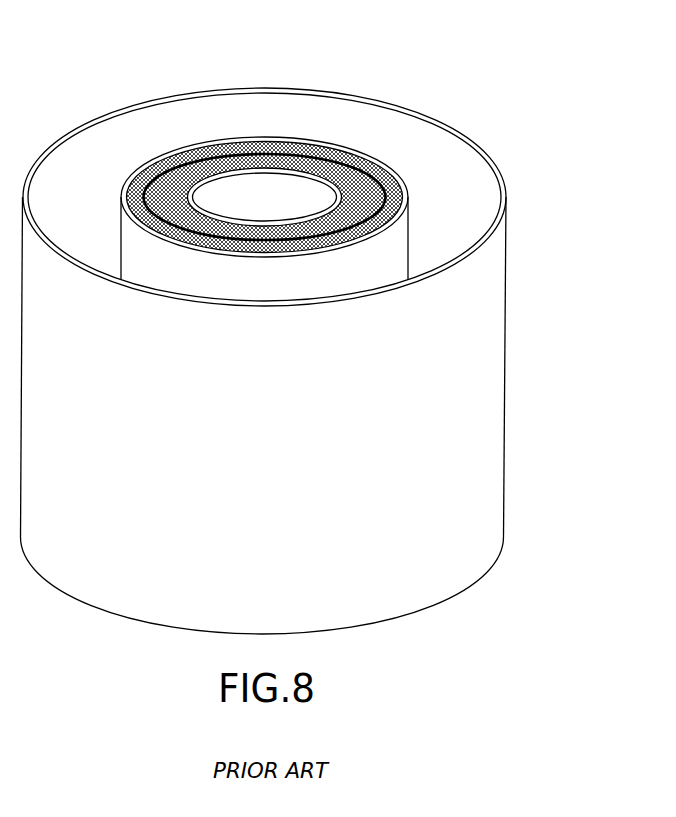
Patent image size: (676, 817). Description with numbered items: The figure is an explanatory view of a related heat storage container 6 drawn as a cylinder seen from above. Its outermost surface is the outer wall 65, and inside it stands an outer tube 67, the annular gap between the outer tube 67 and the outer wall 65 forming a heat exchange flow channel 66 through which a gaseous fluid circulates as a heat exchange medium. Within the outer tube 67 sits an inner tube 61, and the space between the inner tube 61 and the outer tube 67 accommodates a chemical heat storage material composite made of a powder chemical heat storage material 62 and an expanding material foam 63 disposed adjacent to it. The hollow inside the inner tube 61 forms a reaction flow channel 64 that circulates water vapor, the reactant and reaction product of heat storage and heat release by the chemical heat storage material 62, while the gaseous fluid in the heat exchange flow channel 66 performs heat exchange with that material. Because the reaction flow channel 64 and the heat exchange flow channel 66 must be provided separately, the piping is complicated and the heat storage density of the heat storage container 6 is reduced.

The heat storage container 6 is at (312, 323).
The inner tube 61 is at (272, 172).
The chemical heat storage material 62 is at (145, 164).
The expanding material foam 63 is at (195, 143).
The reaction flow channel 64 is at (303, 197).
The outer wall 65 is at (488, 290).
The heat exchange flow channel 66 is at (464, 175).
The outer tube 67 is at (395, 170).